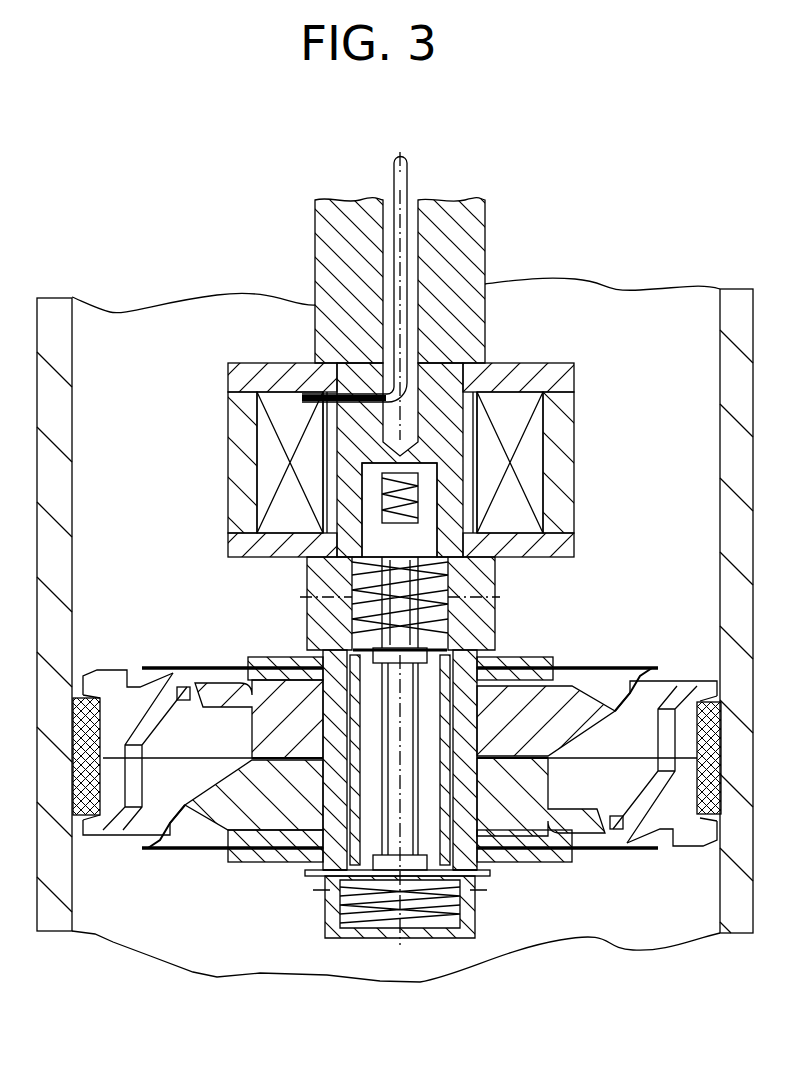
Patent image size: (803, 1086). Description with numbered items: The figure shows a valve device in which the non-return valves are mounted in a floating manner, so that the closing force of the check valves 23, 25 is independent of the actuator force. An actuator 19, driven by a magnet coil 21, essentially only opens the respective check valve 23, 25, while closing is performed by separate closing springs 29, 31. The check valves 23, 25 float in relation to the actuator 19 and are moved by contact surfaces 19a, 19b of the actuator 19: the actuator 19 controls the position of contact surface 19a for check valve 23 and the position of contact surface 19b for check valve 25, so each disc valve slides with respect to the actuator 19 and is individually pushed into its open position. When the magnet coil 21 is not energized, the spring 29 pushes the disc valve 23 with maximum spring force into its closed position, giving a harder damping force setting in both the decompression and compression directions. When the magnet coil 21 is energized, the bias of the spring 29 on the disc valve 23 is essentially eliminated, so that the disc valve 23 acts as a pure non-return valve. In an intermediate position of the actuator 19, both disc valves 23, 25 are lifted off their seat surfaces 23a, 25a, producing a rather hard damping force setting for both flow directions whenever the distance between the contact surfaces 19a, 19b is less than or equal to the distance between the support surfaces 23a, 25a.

The actuator 19 is at (410, 693).
The contact surface 19a is at (315, 650).
The contact surface 19b is at (327, 893).
The magnet coil 21 is at (535, 446).
The check valve 23 is at (358, 623).
The seat surface 23a is at (470, 648).
The check valve 25 is at (463, 903).
The seat surface 25a is at (320, 865).
The closing spring 29 is at (500, 567).
The closing spring 31 is at (460, 938).